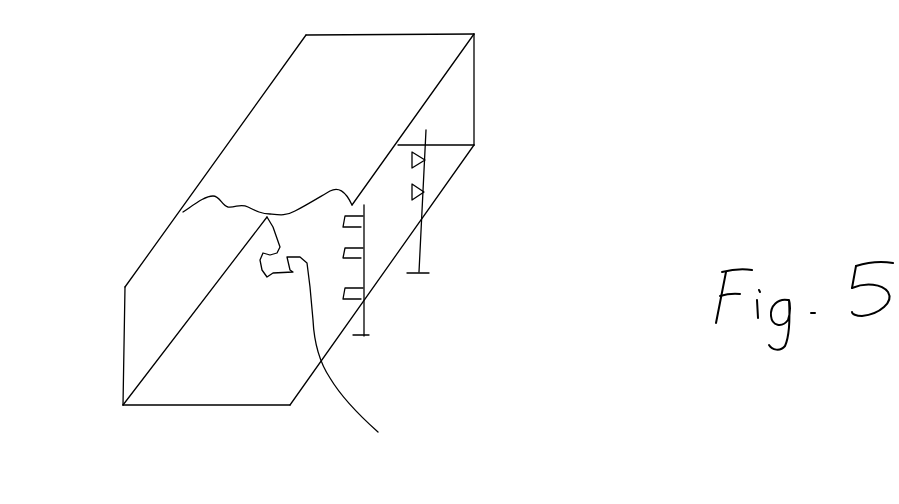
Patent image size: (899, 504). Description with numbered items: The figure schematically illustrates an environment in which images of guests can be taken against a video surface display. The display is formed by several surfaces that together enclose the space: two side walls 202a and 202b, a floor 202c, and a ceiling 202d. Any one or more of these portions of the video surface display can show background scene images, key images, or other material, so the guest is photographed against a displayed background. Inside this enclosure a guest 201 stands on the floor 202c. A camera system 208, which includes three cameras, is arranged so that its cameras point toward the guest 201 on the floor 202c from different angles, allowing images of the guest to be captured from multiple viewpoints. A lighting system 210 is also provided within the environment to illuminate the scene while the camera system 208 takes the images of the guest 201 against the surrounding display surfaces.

The guest 201 is at (352, 341).
The side wall 202a is at (122, 366).
The side wall 202b is at (465, 82).
The floor 202c is at (217, 395).
The ceiling 202d is at (237, 203).
The camera system 208 is at (362, 322).
The lighting system 210 is at (419, 252).